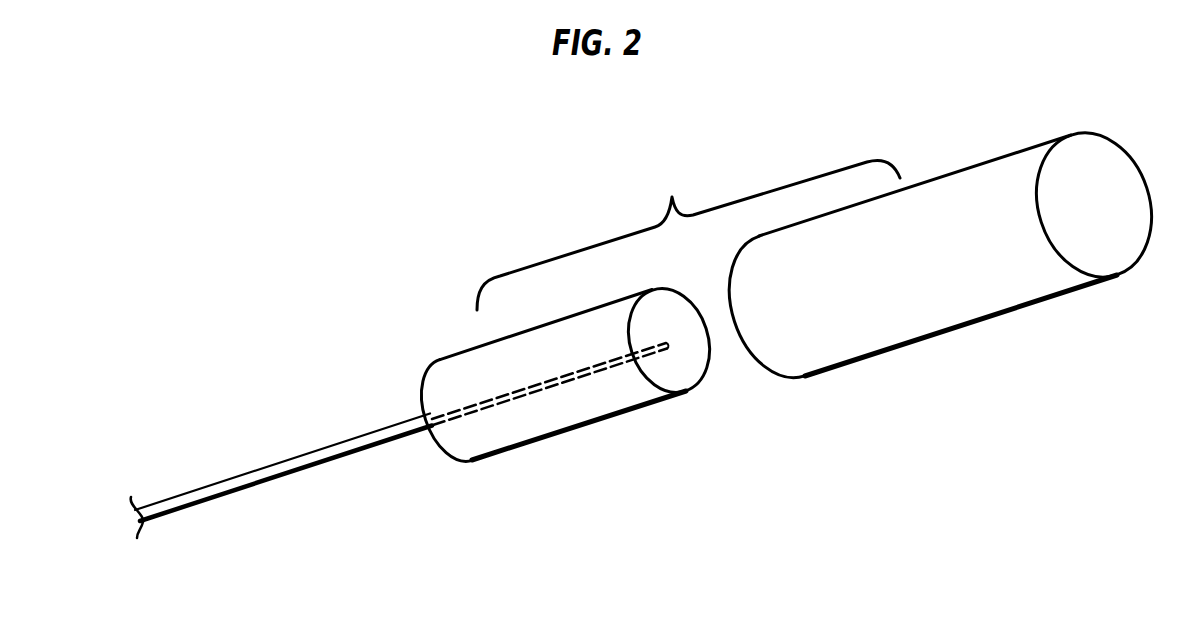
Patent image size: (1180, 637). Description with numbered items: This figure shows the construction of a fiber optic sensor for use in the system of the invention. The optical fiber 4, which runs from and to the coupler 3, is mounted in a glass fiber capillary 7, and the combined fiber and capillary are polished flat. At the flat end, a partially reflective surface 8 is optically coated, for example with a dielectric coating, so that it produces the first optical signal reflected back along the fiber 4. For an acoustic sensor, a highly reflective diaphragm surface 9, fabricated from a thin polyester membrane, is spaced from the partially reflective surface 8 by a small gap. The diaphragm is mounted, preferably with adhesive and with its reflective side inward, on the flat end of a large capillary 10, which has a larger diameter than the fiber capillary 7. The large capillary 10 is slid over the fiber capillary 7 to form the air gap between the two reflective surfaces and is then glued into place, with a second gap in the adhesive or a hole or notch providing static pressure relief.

The coupler 3 is at (289, 459).
The fiber 4 is at (231, 493).
The fiber capillary 7 is at (530, 422).
The partially reflective surface 8 is at (685, 360).
The diaphragm surface 9 is at (1083, 183).
The large capillary 10 is at (893, 305).